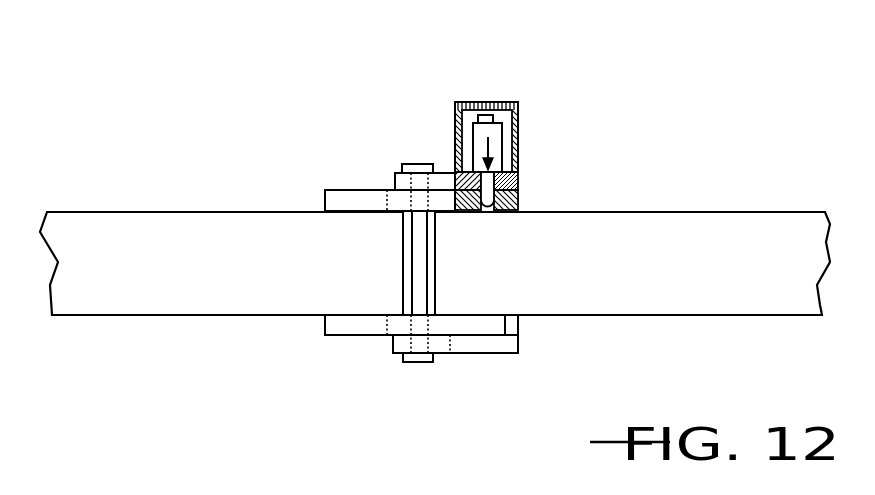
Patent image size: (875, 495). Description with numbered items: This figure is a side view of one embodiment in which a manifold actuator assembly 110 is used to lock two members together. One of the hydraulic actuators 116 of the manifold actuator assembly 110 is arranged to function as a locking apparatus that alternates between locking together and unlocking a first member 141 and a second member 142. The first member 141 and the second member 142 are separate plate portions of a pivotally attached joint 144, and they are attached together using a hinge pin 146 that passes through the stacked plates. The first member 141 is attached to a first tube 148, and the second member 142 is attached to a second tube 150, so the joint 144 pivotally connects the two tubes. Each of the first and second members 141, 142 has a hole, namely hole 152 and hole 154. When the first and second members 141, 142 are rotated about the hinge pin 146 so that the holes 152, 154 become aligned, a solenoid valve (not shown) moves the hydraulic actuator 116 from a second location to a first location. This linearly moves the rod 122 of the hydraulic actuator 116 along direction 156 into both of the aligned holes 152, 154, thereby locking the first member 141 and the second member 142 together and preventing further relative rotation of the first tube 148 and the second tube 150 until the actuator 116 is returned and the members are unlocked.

The manifold actuator assembly 110 is at (497, 102).
The hydraulic actuator 116 is at (493, 128).
The rod 122 is at (518, 172).
The direction 156 is at (487, 145).
The second member 142 is at (395, 174).
The first member 141 is at (325, 190).
The hole 154 is at (513, 187).
The hole 152 is at (523, 193).
The first tube 148 is at (241, 298).
The second tube 150 is at (702, 287).
The hinge pin 146 is at (410, 297).
The pivotally attached joint 144 is at (418, 362).